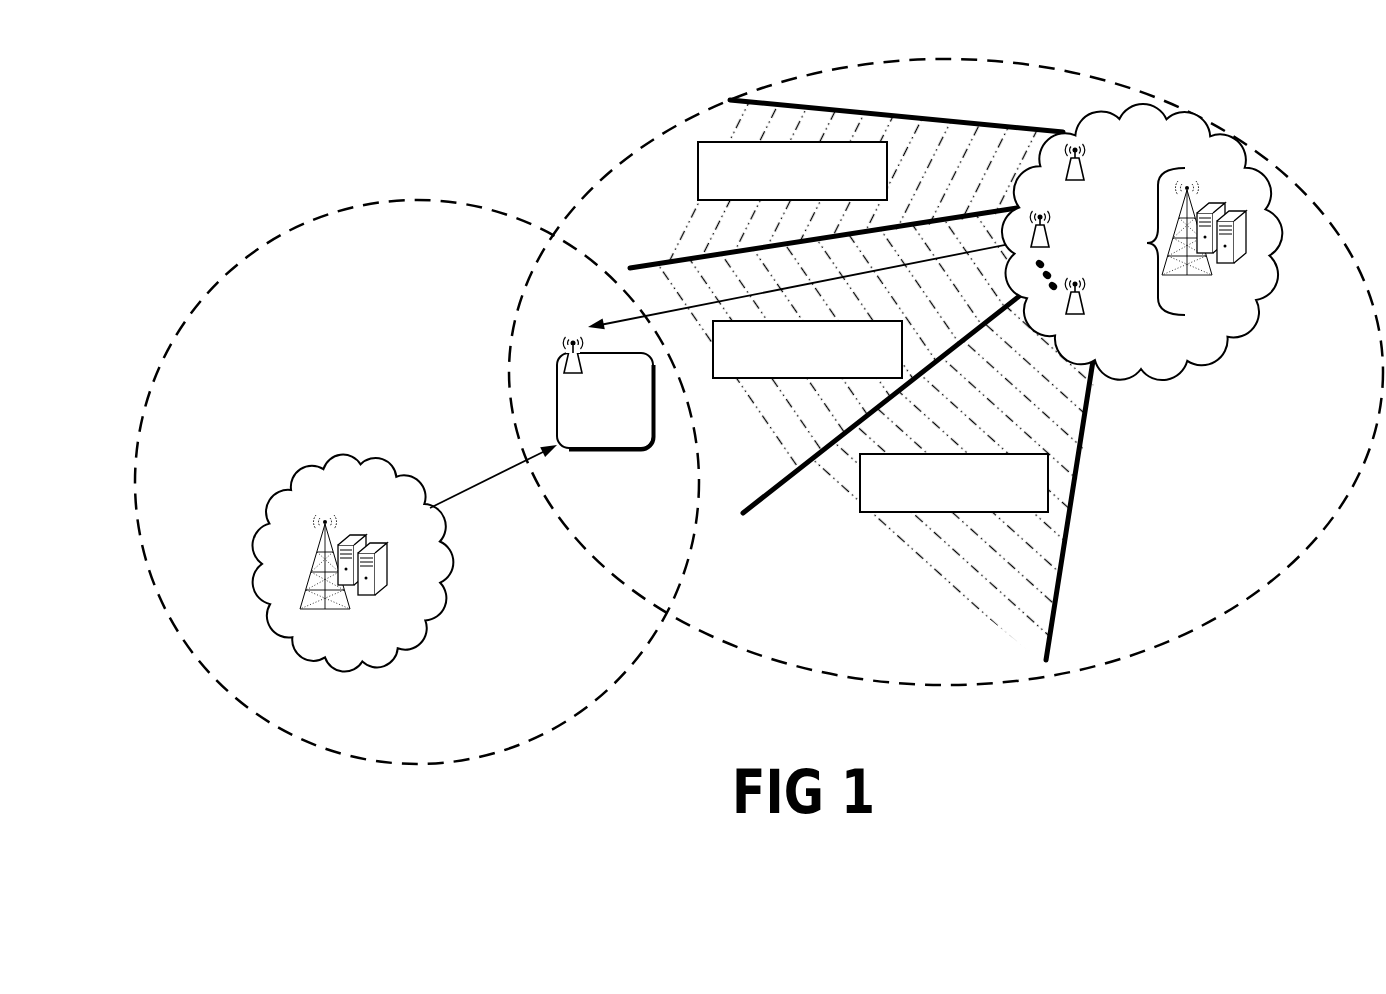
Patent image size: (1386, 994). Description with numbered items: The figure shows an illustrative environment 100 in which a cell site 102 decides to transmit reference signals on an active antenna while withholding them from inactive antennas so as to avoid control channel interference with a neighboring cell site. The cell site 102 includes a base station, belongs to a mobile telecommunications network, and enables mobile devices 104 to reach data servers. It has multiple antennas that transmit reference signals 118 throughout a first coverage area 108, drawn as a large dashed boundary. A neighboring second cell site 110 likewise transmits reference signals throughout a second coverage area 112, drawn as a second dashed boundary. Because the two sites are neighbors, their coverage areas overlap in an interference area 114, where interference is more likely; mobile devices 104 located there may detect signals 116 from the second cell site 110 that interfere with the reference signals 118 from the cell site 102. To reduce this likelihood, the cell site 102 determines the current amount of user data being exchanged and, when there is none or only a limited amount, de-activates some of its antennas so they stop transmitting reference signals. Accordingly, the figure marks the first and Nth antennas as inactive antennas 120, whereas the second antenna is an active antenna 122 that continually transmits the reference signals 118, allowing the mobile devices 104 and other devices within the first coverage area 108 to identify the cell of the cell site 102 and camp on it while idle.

The environment 100 is at (287, 103).
The cell site 102 is at (1189, 242).
The mobile devices 104 is at (620, 437).
The first coverage area 108 is at (1133, 652).
The second cell site 110 is at (387, 657).
The second coverage area 112 is at (355, 203).
The interference area 114 is at (638, 546).
The signals 116 is at (483, 481).
The reference signals 118 is at (618, 320).
The inactive antennas 120 is at (970, 506).
The active antenna 122 is at (823, 374).